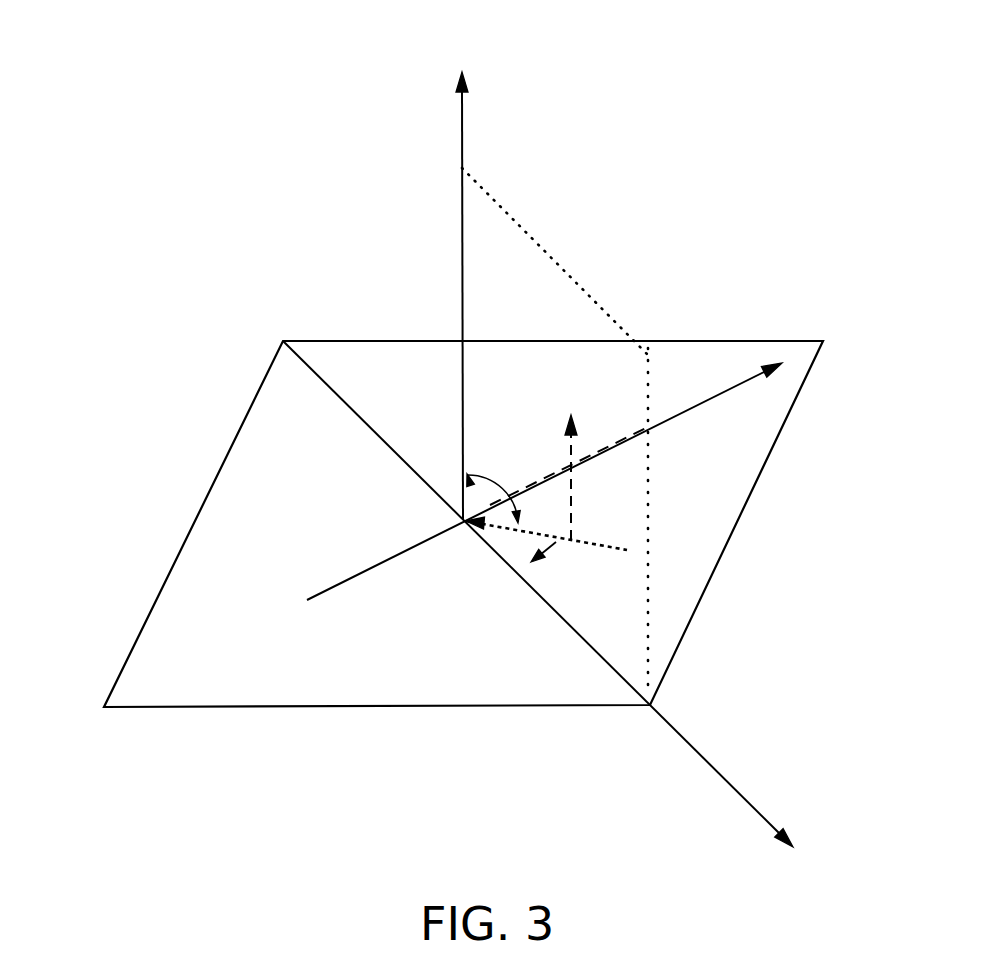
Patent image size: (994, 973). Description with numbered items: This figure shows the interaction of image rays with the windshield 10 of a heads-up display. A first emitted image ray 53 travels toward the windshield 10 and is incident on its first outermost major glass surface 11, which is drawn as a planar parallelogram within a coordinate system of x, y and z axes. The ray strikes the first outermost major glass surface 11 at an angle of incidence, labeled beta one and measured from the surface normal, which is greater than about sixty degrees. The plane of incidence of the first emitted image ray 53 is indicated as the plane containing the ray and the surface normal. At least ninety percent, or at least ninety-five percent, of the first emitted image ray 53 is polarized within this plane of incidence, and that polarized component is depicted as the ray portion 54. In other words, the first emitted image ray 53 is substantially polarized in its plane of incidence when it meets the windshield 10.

The windshield 10 is at (235, 312).
The first outermost major glass surface 11 is at (143, 686).
The first emitted image ray 53 is at (598, 543).
The ray portion 54 is at (568, 492).